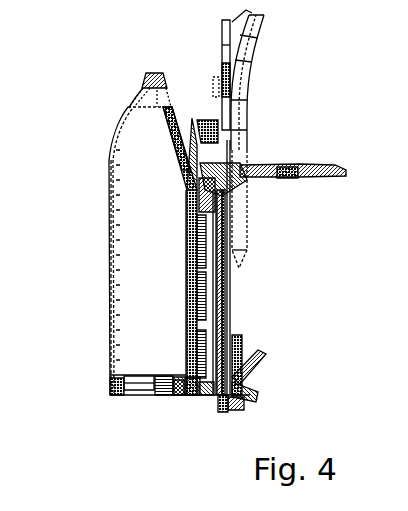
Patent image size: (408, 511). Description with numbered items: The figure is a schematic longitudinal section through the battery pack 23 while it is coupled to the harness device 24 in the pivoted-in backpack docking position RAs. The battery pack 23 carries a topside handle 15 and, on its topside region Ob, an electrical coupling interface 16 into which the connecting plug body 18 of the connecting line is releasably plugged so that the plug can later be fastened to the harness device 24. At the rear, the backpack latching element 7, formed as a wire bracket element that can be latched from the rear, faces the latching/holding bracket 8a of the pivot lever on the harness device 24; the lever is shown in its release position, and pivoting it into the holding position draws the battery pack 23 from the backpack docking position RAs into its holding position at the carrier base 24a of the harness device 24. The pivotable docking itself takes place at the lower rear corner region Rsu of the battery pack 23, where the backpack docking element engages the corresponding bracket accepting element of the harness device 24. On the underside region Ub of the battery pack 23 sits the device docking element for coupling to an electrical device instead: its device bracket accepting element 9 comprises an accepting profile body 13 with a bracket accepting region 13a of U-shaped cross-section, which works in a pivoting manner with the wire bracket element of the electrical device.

The topside handle 15 is at (148, 75).
The connecting plug body 18 is at (203, 120).
The electrical coupling interface 16 is at (189, 145).
The topside region Ob is at (137, 100).
The backpack docking position RAs is at (111, 219).
The battery pack 23 is at (107, 255).
The backpack latching element 7 is at (187, 187).
The latching/holding bracket 8a is at (191, 221).
The carrier base 24a is at (221, 283).
The harness device 24 is at (231, 300).
The bracket accepting region 13a is at (181, 378).
The underside region Ub is at (148, 400).
The accepting profile body 13 is at (168, 398).
The device bracket accepting element 9 is at (187, 397).
The lower rear corner region Rsu is at (193, 394).